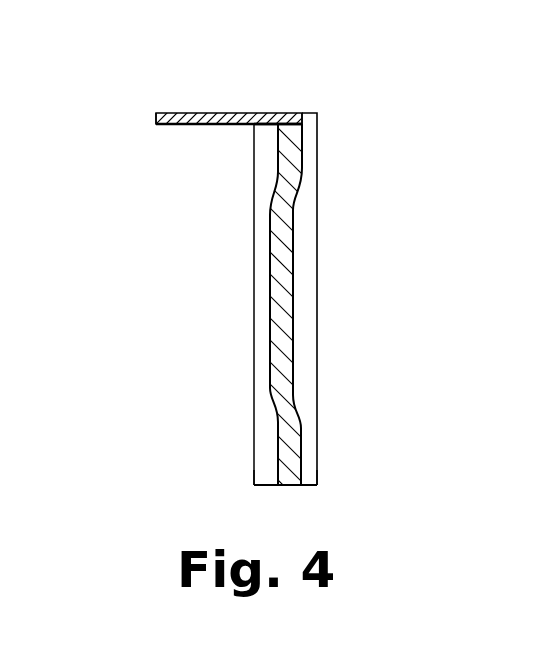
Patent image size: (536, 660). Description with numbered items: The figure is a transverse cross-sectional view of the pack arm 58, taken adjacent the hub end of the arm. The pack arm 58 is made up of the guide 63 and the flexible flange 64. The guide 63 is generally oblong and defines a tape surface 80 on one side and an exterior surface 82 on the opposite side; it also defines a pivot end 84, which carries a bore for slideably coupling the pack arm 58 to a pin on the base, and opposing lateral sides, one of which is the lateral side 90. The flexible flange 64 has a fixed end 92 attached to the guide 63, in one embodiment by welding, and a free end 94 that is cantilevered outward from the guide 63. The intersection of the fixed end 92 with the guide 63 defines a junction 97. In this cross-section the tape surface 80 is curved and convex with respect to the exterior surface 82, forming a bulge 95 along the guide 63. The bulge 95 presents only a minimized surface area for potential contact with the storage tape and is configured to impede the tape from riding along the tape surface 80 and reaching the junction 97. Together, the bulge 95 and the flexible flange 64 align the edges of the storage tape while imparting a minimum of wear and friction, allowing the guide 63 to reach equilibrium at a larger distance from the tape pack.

The pack arm 58 is at (98, 292).
The guide 63 is at (296, 360).
The flexible flange 64 is at (200, 113).
The tape surface 80 is at (278, 455).
The exterior surface 82 is at (303, 449).
The pivot end 84 is at (302, 232).
The lateral side 90 is at (288, 485).
The fixed end 92 is at (293, 113).
The free end 94 is at (157, 120).
The bulge 95 is at (256, 320).
The junction 97 is at (280, 126).